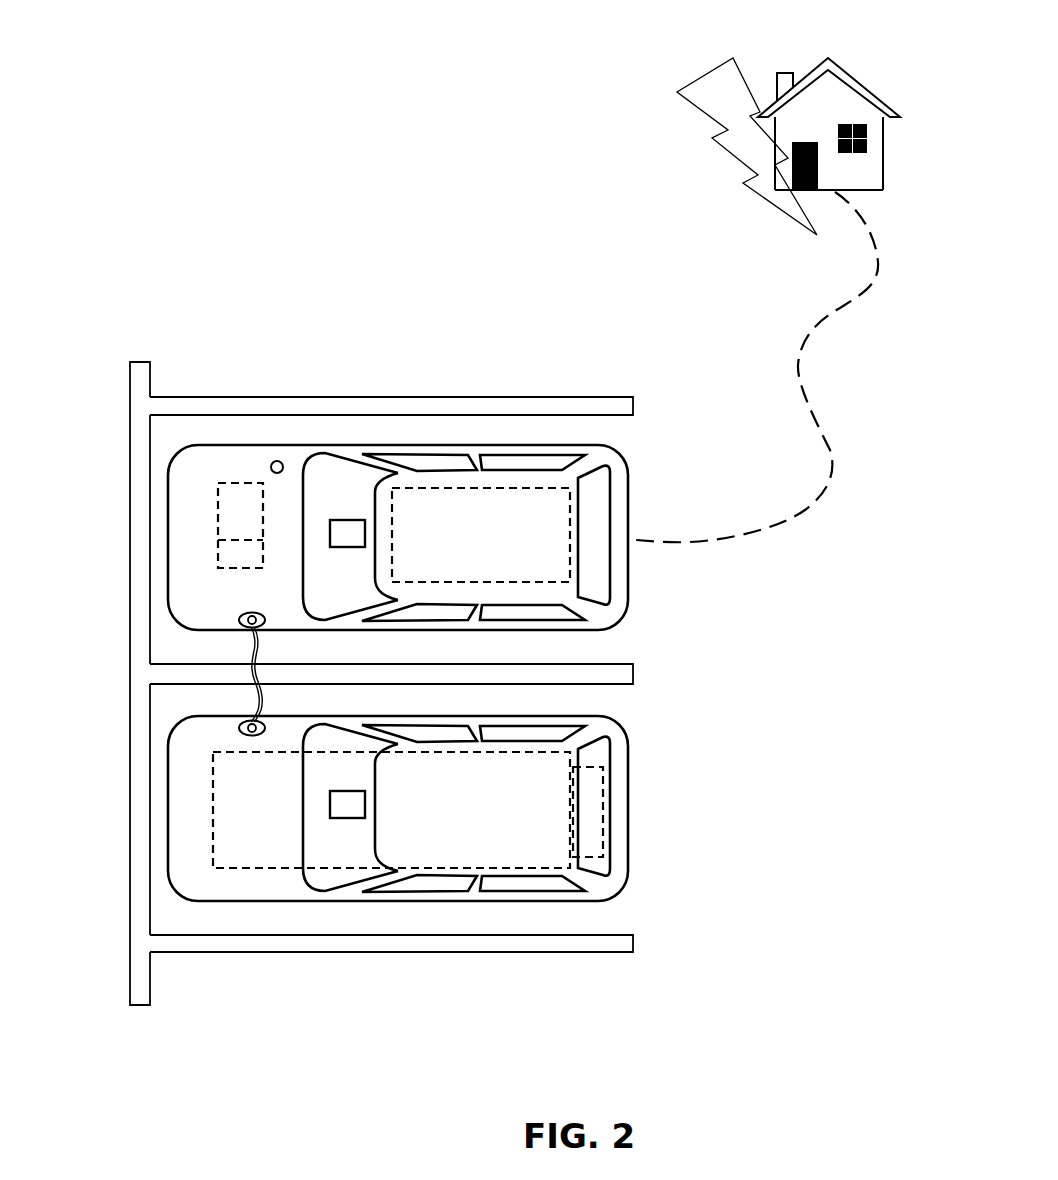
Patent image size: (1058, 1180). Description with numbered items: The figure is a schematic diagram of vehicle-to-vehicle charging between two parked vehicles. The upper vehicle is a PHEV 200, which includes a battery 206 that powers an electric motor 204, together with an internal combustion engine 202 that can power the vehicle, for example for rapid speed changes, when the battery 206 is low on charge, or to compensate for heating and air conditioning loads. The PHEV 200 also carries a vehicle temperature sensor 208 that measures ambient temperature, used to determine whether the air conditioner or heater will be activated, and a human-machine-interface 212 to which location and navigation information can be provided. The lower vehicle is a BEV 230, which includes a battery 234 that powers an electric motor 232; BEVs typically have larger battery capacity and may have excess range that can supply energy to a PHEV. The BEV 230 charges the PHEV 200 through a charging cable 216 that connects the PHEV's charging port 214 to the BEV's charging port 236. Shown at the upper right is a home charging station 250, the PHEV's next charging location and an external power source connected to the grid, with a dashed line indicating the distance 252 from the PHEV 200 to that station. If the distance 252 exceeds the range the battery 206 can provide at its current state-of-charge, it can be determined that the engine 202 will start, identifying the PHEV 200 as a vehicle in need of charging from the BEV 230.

The PHEV 200 is at (628, 577).
The internal combustion engine 202 is at (237, 488).
The electric motor 204 is at (220, 558).
The battery 206 is at (520, 500).
The vehicle temperature sensor 208 is at (278, 461).
The human-machine-interface 212 is at (345, 520).
The charging port 214 is at (239, 618).
The charging cable 216 is at (250, 650).
The BEV 230 is at (630, 752).
The electric motor 232 is at (595, 825).
The battery 234 is at (260, 870).
The charging port 236 is at (239, 729).
The home charging station 250 is at (847, 70).
The distance 252 is at (877, 253).